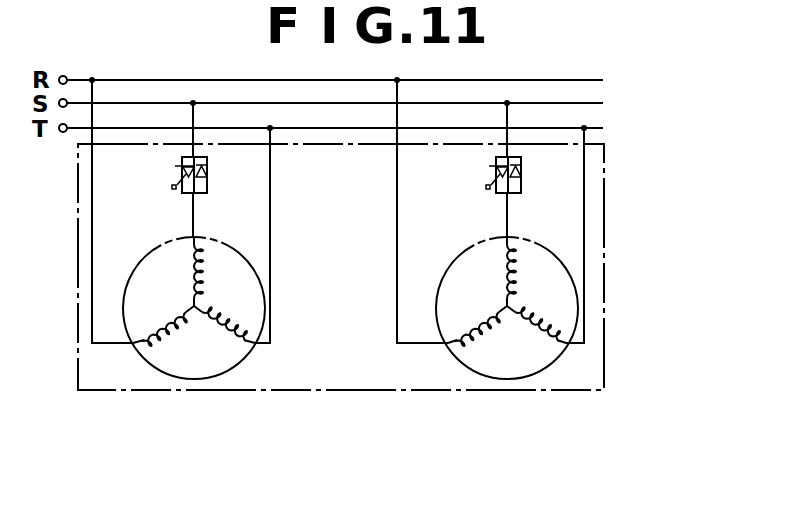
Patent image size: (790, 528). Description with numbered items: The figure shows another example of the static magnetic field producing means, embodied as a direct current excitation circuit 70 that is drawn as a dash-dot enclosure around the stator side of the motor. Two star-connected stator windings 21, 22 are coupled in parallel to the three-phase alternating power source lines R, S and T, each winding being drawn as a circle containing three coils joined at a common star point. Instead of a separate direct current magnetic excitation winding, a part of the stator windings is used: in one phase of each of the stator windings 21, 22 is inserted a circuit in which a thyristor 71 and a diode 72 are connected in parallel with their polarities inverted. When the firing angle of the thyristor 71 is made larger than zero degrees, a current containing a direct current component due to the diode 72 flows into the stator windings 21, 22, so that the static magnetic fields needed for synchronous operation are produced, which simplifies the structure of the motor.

The direct current excitation circuit 70 is at (606, 216).
The thyristor 71 is at (173, 173).
The diode 72 is at (207, 176).
The stator winding 21 is at (248, 353).
The stator winding 22 is at (557, 362).